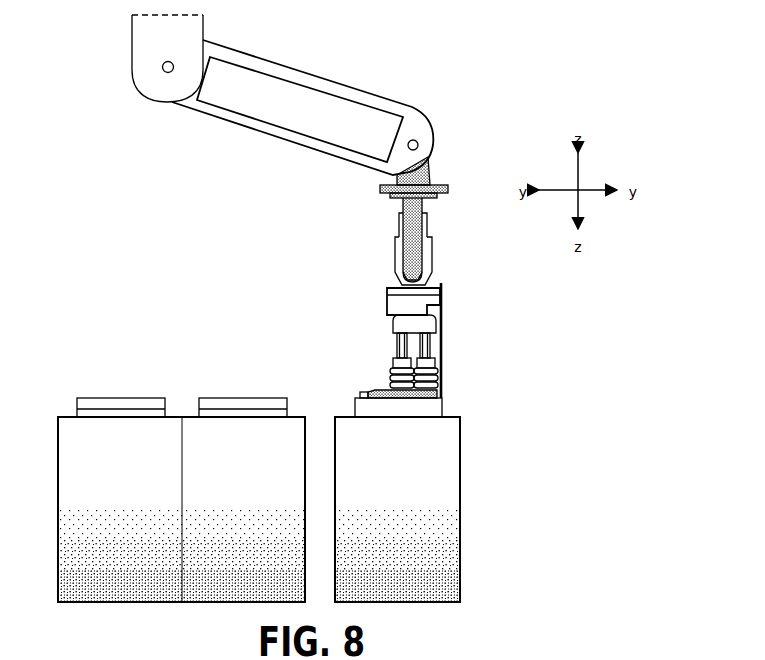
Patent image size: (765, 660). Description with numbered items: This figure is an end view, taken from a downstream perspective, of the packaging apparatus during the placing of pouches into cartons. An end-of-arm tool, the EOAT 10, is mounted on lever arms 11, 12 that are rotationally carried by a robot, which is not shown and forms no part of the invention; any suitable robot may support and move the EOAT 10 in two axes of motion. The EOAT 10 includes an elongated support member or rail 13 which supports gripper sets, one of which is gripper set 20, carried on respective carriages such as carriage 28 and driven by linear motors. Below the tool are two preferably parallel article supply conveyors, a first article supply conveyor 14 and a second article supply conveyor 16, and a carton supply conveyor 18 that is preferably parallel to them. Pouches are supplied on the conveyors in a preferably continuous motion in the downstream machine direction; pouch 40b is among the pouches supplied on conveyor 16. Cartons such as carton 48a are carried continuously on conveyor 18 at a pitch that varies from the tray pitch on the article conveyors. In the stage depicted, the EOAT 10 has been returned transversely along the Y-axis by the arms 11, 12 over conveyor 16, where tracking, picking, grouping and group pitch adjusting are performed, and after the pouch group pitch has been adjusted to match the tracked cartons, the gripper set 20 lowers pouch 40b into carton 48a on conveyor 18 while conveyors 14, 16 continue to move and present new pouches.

The end-of-arm tool 10 is at (336, 293).
The lever arm 11 is at (275, 138).
The lever arm 12 is at (130, 40).
The elongated support member or rail 13 is at (423, 223).
The first article supply conveyor 14 is at (67, 414).
The second article supply conveyor 16 is at (190, 414).
The carton supply conveyor 18 is at (453, 414).
The gripper set 20 is at (393, 337).
The carriage 28 is at (395, 257).
The pouch 40b is at (383, 389).
The carton 48a is at (441, 297).